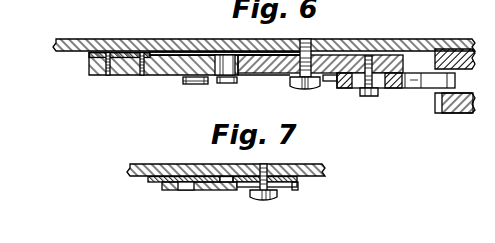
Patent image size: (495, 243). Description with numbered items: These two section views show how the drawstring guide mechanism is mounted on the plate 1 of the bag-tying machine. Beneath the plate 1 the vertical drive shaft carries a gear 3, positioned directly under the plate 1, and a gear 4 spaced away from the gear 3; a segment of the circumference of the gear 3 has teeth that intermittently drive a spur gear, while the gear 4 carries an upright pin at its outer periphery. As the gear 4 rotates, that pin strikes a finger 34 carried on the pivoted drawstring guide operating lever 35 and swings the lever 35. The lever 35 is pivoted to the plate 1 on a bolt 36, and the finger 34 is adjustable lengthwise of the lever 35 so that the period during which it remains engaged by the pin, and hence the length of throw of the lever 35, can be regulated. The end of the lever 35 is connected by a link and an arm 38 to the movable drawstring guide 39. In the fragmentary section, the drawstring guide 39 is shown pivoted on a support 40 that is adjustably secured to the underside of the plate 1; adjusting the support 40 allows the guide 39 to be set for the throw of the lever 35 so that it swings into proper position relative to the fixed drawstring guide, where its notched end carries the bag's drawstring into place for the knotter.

In FIG. 6, the plate 1 is at (372, 39).
In FIG. 7, the plate 1 is at (143, 164).
In FIG. 6, the gear 3 is at (445, 49).
In FIG. 6, the gear 4 is at (447, 113).
In FIG. 6, the finger 34 is at (392, 88).
In FIG. 6, the drawstring guide operating lever 35 is at (268, 75).
In FIG. 6, the bolt 36 is at (300, 89).
In FIG. 6, the arm 38 is at (126, 75).
In FIG. 6, the movable drawstring guide 39 is at (92, 57).
In FIG. 7, the movable drawstring guide 39 is at (150, 182).
In FIG. 7, the support 40 is at (213, 190).